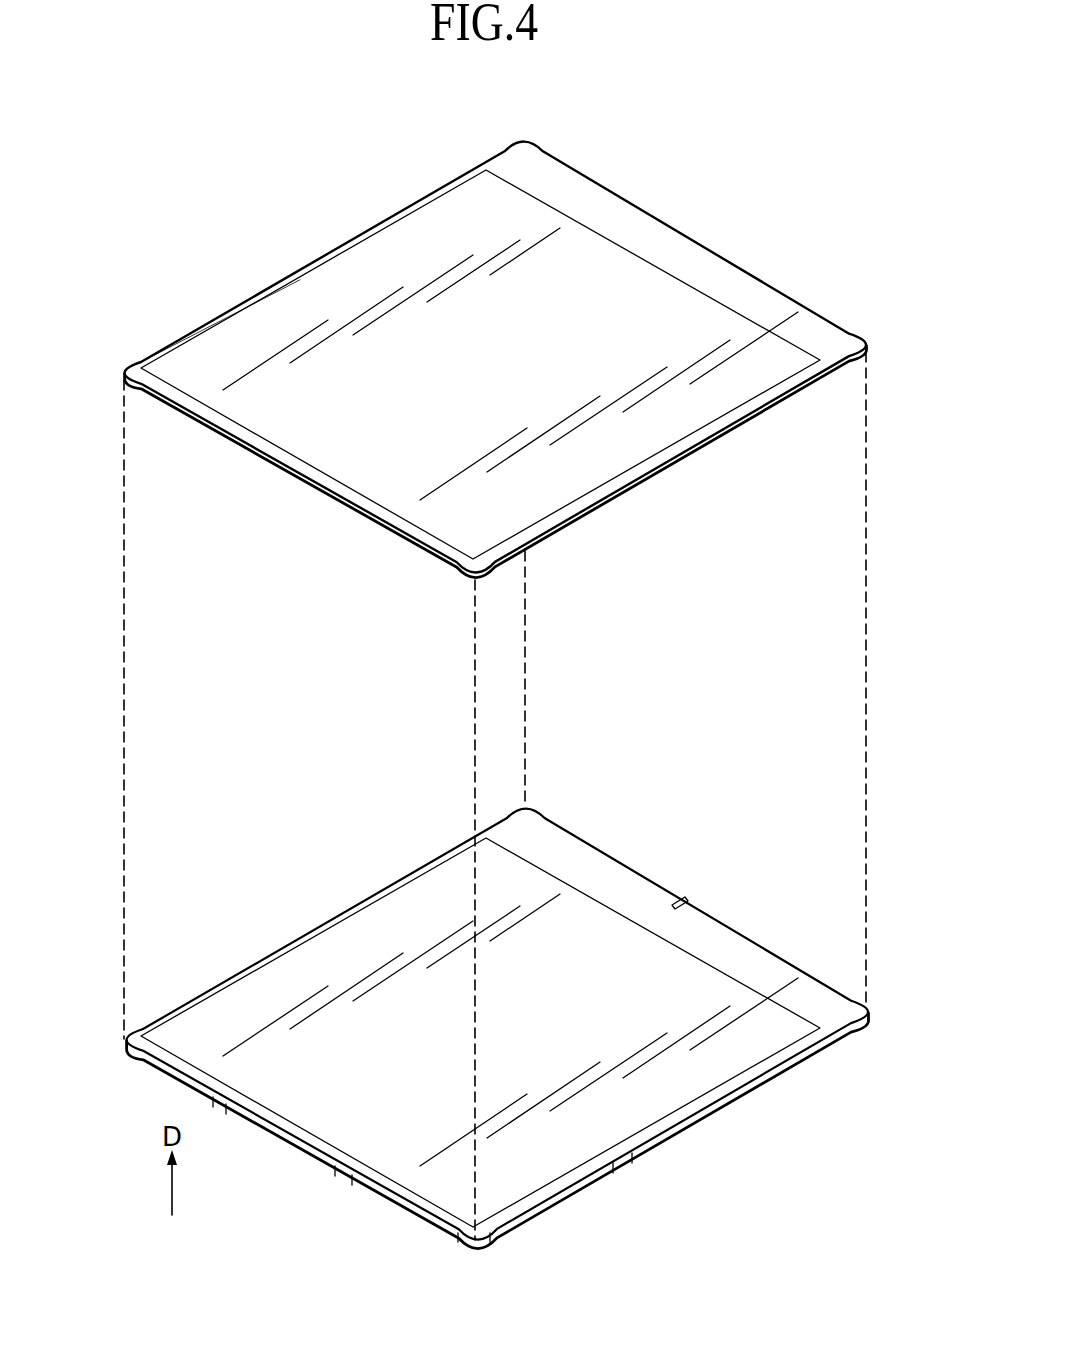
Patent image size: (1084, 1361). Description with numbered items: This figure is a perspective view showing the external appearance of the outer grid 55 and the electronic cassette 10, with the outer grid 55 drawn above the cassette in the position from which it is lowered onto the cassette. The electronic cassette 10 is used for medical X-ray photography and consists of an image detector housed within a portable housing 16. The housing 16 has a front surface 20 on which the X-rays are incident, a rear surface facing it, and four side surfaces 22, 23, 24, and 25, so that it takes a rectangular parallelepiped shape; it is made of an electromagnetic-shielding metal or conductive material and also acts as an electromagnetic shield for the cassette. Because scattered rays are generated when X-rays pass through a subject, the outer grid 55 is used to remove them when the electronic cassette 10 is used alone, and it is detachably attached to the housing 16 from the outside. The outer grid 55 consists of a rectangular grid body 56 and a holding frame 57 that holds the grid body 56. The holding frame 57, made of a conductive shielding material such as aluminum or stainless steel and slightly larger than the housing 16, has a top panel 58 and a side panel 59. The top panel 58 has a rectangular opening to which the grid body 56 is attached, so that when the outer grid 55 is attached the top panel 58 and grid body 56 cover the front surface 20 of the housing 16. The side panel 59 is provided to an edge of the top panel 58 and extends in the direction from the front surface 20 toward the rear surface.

The electronic cassette 10 is at (387, 859).
The housing 16 is at (731, 902).
The front surface 20 is at (826, 1025).
The side surface 22 is at (622, 869).
The side surface 23 is at (297, 1143).
The side surface 24 is at (633, 1153).
The side surface 25 is at (283, 945).
The outer grid 55 is at (712, 208).
The grid body 56 is at (384, 246).
The holding frame 57 is at (217, 299).
The top panel 58 is at (558, 178).
The side panel 59 is at (682, 463).